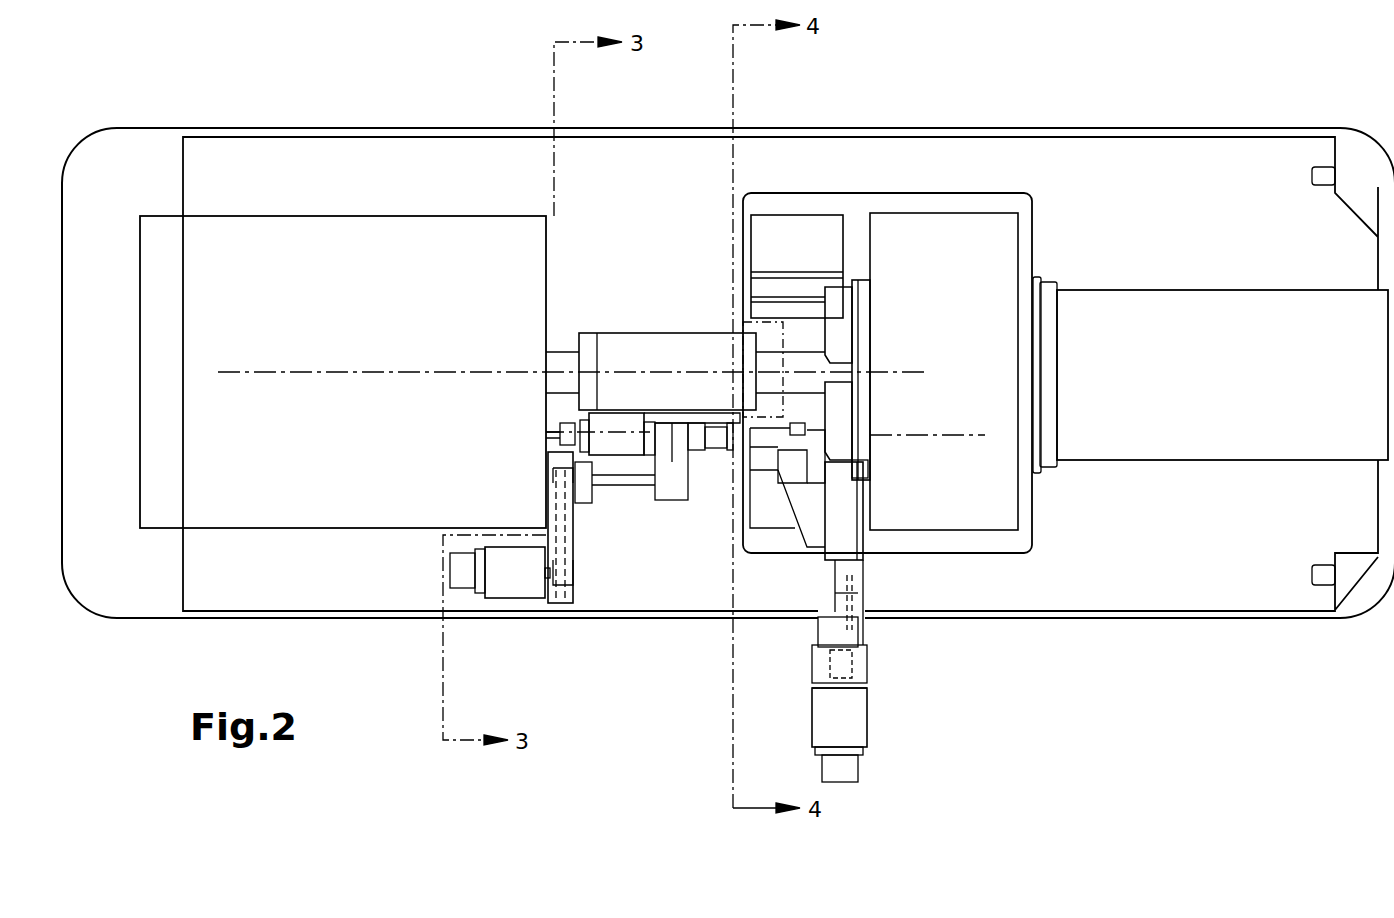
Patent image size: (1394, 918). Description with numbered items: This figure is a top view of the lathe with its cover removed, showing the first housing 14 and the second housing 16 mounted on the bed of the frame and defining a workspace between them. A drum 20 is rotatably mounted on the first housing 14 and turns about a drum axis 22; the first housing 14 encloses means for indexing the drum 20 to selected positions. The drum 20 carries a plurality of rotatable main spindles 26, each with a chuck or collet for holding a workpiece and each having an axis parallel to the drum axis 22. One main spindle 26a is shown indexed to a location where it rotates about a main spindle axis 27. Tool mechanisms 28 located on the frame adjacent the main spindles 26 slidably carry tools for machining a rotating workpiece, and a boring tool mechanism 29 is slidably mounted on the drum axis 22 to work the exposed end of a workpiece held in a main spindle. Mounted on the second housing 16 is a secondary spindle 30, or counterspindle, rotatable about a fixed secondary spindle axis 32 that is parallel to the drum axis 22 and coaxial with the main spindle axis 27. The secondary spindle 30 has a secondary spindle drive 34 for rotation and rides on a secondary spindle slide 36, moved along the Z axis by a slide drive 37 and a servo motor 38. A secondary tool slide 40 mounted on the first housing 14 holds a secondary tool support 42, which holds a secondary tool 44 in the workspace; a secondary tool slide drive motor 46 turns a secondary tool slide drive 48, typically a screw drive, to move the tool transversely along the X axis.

The first housing 14 is at (987, 262).
The second housing 16 is at (277, 459).
The drum 20 is at (865, 312).
The drum axis 22 is at (345, 370).
The main spindles 26 is at (855, 350).
The main spindle 26a is at (855, 447).
The main spindle axis 27 is at (957, 433).
The tool mechanisms 28 is at (790, 215).
The boring tool mechanism 29 is at (638, 333).
The secondary spindle 30 is at (722, 450).
The secondary spindle axis 32 is at (677, 472).
The secondary spindle drive 34 is at (630, 457).
The secondary spindle slide 36 is at (613, 488).
The slide drive 37 is at (547, 503).
The motor 38 is at (515, 598).
The secondary tool slide 40 is at (868, 582).
The secondary tool support 42 is at (790, 505).
The secondary tool 44 is at (805, 420).
The secondary tool slide drive motor 46 is at (867, 717).
The secondary tool slide drive 48 is at (827, 592).